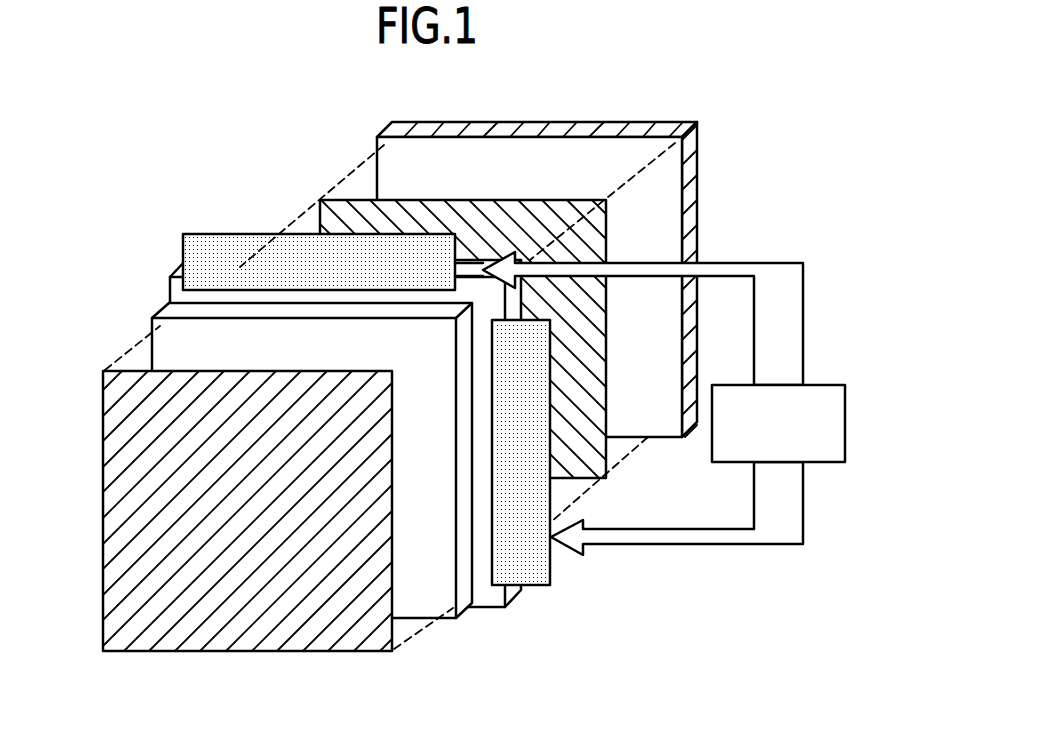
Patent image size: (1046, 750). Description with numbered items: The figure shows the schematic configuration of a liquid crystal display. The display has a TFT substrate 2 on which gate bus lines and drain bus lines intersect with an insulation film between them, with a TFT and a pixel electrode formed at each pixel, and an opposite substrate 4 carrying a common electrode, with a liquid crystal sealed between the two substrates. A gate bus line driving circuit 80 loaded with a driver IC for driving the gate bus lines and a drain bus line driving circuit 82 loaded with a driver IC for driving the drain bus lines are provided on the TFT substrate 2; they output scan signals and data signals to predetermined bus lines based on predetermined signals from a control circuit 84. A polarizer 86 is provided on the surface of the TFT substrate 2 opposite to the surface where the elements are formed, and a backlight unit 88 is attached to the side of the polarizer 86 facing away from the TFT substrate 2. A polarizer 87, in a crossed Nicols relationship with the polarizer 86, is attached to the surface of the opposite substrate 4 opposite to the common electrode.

The TFT substrate 2 is at (492, 596).
The opposite substrate 4 is at (452, 619).
The gate bus line driving circuit 80 is at (545, 576).
The drain bus line driving circuit 82 is at (205, 243).
The control circuit 84 is at (825, 384).
The polarizer 86 is at (600, 461).
The polarizer 87 is at (110, 612).
The backlight unit 88 is at (698, 168).